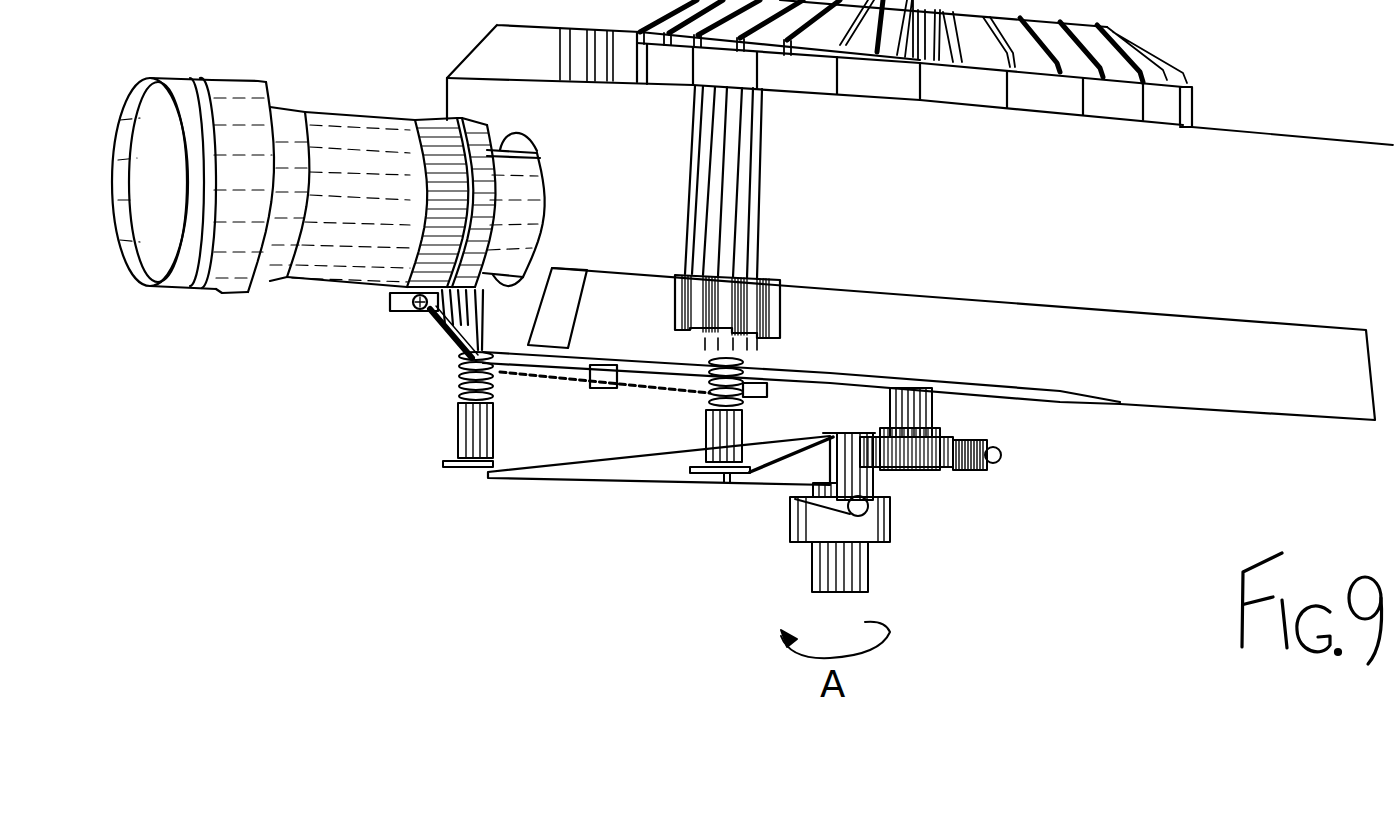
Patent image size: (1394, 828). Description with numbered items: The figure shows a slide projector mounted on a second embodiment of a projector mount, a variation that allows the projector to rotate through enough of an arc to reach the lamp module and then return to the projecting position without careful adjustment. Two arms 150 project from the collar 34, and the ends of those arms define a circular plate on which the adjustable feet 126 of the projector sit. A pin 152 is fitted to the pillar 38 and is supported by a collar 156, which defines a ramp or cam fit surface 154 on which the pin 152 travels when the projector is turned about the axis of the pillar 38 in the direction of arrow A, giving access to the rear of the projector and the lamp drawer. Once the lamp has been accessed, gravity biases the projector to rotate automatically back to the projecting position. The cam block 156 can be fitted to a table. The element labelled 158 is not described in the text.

The collar 34 is at (853, 455).
The pillar 38 is at (812, 570).
The adjustable feet 126 is at (430, 428).
The arms 150 is at (777, 468).
The pin 152 is at (853, 507).
The ramp or cam fit surface 154 is at (793, 525).
The collar 156 is at (950, 520).
The ball end 158 is at (1002, 454).